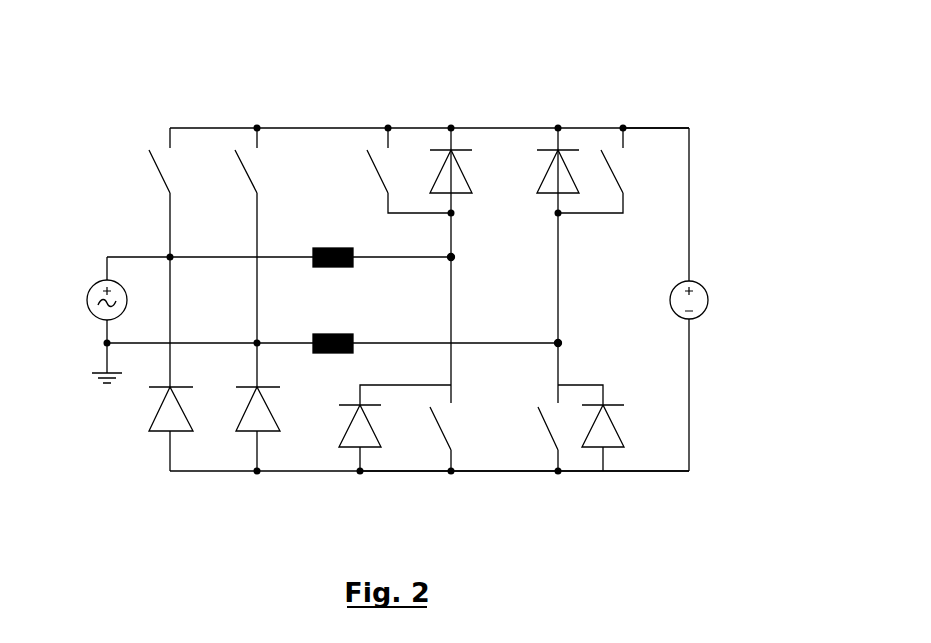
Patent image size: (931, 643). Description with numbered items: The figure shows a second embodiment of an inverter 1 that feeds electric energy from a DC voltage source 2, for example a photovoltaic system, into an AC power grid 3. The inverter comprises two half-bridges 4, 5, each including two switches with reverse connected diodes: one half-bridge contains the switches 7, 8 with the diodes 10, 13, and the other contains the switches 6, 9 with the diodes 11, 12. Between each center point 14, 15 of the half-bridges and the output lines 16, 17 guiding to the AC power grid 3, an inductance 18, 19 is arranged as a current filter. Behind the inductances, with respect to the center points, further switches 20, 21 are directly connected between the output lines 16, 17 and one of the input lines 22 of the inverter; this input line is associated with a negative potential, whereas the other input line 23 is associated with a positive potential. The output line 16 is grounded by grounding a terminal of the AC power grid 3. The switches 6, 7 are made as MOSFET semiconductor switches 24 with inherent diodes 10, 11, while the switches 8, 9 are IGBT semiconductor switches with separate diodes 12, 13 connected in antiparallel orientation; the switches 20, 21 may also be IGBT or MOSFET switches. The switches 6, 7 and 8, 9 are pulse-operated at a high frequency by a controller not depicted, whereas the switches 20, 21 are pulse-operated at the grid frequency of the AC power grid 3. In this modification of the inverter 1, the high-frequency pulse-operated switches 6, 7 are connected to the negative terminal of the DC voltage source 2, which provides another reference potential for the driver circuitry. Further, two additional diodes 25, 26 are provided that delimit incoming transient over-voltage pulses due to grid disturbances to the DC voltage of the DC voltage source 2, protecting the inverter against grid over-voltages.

The inverter 1 is at (722, 97).
The DC voltage source 2 is at (707, 287).
The AC power grid 3 is at (87, 312).
The half-bridge 4 is at (558, 100).
The half-bridge 5 is at (451, 100).
The switch 6 is at (540, 423).
The switch 7 is at (453, 425).
The switch 8 is at (628, 158).
The switch 9 is at (375, 147).
The diode 10 is at (628, 422).
The diode 11 is at (385, 417).
The diode 12 is at (582, 168).
The diode 13 is at (428, 168).
The center point 14 is at (560, 342).
The center point 15 is at (453, 258).
The output line 16 is at (218, 342).
The output line 17 is at (230, 255).
The inductance 18 is at (353, 335).
The inductance 19 is at (352, 250).
The switch 20 is at (177, 162).
The switch 21 is at (265, 162).
The input line 22 is at (668, 128).
The input line 23 is at (658, 472).
The MOSFET semiconductor switch 24 is at (400, 474).
The additional diode 25 is at (165, 422).
The additional diode 26 is at (252, 422).